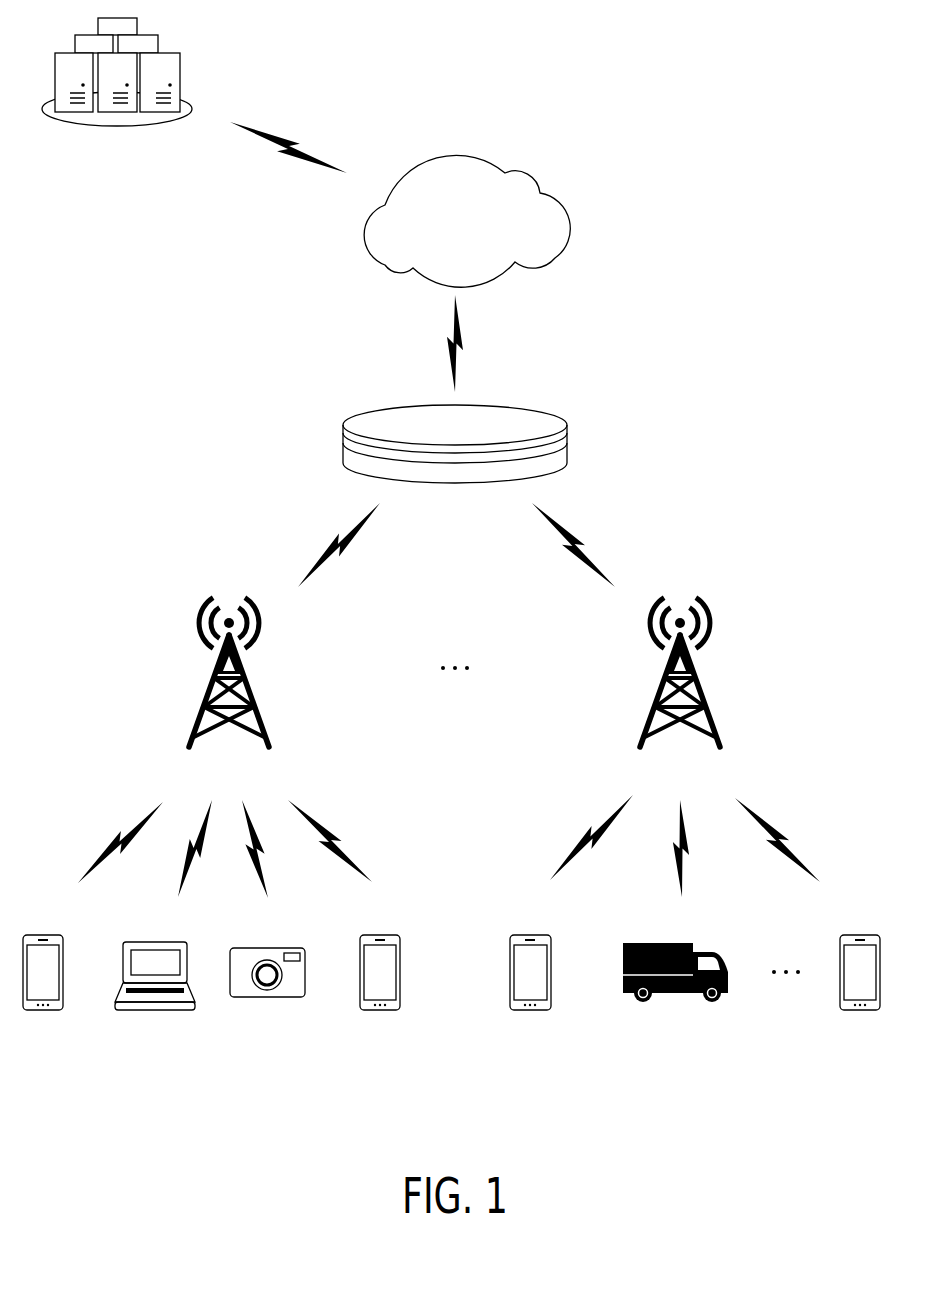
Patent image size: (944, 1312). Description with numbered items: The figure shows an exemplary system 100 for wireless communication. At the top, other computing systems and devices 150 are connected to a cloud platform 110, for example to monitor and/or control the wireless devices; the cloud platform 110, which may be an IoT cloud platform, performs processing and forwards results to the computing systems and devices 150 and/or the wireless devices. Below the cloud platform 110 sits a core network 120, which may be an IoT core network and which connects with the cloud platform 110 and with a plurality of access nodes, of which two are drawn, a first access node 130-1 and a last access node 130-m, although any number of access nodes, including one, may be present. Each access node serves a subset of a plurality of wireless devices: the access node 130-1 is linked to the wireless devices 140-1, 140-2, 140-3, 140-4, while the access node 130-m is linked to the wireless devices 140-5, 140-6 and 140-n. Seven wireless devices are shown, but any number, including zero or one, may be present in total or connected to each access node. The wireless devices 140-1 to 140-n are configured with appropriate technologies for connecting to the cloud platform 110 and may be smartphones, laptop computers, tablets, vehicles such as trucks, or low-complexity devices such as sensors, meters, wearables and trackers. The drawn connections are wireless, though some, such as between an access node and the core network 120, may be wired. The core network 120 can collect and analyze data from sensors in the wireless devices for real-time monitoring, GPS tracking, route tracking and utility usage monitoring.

The system 100 is at (716, 74).
The cloud platform 110 is at (568, 222).
The core network 120 is at (568, 432).
The access node 130-1 is at (258, 698).
The access node 130-m is at (706, 696).
The wireless device 140-1 is at (44, 1010).
The wireless device 140-2 is at (165, 1010).
The wireless device 140-3 is at (270, 997).
The wireless device 140-4 is at (381, 1010).
The wireless device 140-5 is at (531, 1010).
The wireless device 140-6 is at (653, 998).
The wireless device 140-n is at (862, 1010).
The computing systems and devices 150 is at (158, 45).